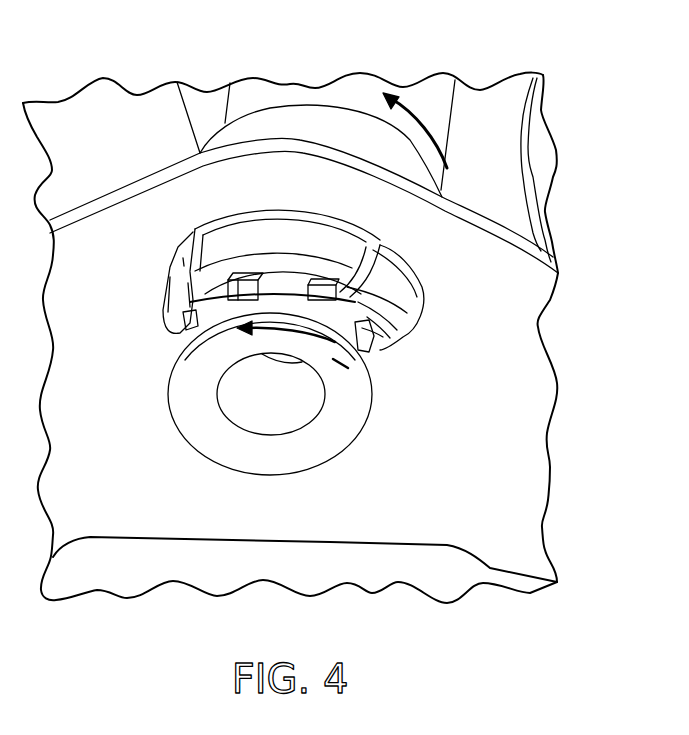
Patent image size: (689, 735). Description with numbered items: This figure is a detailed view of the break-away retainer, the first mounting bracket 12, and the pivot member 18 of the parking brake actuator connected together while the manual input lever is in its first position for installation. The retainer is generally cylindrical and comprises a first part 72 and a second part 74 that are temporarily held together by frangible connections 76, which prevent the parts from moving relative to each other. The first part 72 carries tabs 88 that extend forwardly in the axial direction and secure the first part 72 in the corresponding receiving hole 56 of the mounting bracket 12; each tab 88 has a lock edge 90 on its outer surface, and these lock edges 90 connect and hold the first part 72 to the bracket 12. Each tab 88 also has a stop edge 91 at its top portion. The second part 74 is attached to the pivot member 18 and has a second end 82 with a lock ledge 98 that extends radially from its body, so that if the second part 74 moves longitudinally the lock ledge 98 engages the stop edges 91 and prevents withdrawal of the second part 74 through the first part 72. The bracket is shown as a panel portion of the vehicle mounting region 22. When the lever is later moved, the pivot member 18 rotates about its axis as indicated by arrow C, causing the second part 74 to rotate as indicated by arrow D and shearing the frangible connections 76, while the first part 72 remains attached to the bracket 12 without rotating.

The first mounting bracket 12 is at (513, 240).
The pivot member 18 is at (424, 100).
The pillar flange 22 is at (508, 92).
The receiving hole 56 is at (420, 313).
The first part 72 is at (243, 226).
The second part 74 is at (350, 462).
The frangible connection 76 is at (178, 338).
The second end 82 is at (298, 458).
The tab 88 is at (403, 275).
The lock edge 90 is at (186, 228).
The stop edge 91 is at (175, 317).
The lock ledge 98 is at (378, 390).
The arrow C is at (446, 130).
The arrow D is at (371, 347).